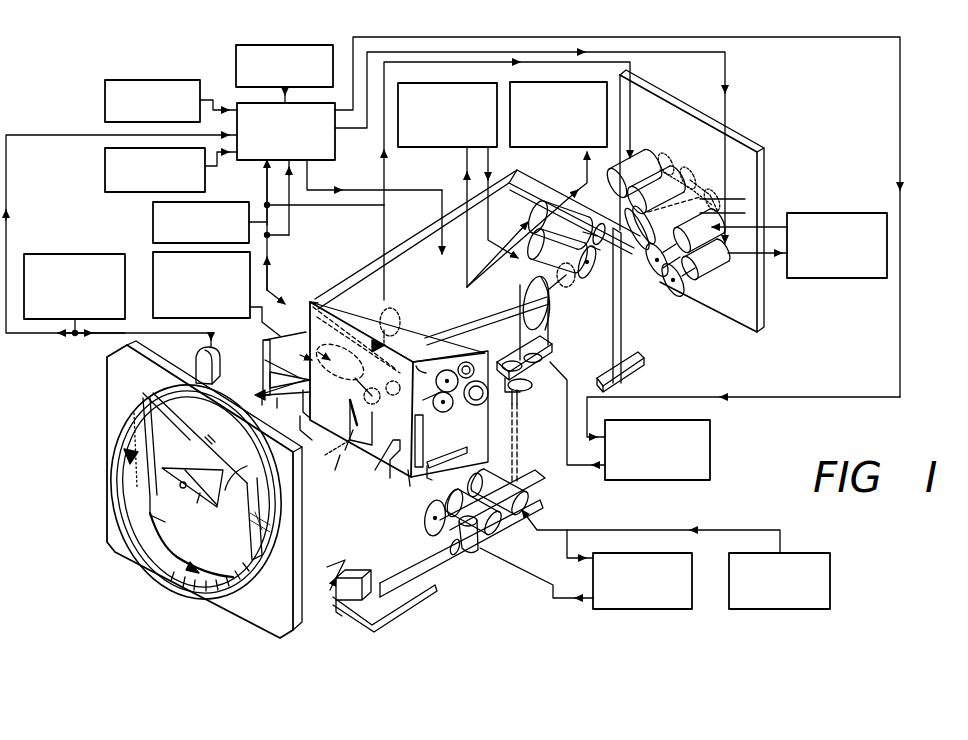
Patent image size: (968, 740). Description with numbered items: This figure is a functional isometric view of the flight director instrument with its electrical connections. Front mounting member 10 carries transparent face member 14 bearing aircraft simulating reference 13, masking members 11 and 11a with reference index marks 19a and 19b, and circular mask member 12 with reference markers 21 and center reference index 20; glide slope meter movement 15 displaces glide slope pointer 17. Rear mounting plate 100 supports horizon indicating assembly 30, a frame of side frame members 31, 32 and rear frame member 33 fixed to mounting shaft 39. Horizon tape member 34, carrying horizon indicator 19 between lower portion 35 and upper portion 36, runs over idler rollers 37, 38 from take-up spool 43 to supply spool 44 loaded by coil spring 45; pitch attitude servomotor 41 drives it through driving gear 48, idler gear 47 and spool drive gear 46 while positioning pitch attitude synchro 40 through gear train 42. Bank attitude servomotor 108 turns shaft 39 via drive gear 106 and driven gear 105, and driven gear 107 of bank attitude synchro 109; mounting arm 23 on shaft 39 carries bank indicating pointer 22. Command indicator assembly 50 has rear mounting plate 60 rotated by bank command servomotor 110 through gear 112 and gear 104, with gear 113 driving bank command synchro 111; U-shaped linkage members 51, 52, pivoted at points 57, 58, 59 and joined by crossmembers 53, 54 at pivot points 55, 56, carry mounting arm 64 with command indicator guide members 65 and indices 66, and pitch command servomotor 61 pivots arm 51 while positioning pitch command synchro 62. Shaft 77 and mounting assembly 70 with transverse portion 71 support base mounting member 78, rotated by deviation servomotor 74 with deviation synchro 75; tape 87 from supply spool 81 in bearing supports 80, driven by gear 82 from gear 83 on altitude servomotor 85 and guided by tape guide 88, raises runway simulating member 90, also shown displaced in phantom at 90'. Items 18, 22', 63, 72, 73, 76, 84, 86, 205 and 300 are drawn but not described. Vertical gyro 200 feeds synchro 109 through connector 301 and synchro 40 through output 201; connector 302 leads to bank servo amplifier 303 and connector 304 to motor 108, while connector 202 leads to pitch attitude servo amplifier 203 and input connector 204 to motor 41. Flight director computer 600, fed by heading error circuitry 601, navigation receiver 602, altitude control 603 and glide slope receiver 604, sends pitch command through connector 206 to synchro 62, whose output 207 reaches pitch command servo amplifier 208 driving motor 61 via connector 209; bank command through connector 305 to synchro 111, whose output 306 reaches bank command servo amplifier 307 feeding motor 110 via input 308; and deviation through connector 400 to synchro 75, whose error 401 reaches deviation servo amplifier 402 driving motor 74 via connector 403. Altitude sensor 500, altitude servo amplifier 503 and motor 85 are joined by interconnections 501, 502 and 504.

The front mounting member 10 is at (204, 486).
The masking member 11 is at (195, 492).
The masking member 11a is at (228, 472).
The circular mask member 12 is at (191, 545).
The aircraft simulating reference 13 is at (192, 497).
The transparent circular face member 14 is at (214, 438).
The glide slope meter movement 15 is at (200, 359).
The glide slope pointer 17 is at (144, 450).
The index 18 is at (163, 503).
The horizon indicator 19 is at (363, 422).
The horizontal reference index mark 19a is at (165, 455).
The horizontal reference index mark 19b is at (239, 519).
The center reference index 20 is at (210, 565).
The reference markers 21 is at (199, 553).
The bank indicating pointer 22 is at (324, 597).
The bracket 22' is at (329, 461).
The rigid mounting arm 23 is at (438, 567).
The horizon indicating assembly 30 is at (397, 363).
The side frame member 31 is at (356, 328).
The side frame member 32 is at (453, 414).
The rear frame member 33 is at (425, 307).
The horizon tape member 34 is at (378, 470).
The lower portion of horizon tape 35 is at (352, 450).
The upper portion of horizon tape 36 is at (288, 346).
The idler roller member 37 is at (317, 287).
The idler roller member 38 is at (311, 434).
The mounting shaft 39 is at (592, 265).
The pitch attitude synchro 40 is at (339, 362).
The pitch attitude servomotor 41 is at (395, 397).
The gear train 42 is at (370, 392).
The take-up tape spool 43 is at (396, 313).
The supply tape spool 44 is at (381, 314).
The coil spring member 45 is at (480, 398).
The spool drive gear 46 is at (443, 380).
The idler gear 47 is at (435, 396).
The driving gear 48 is at (459, 394).
The command indicator assembly 50 is at (477, 239).
The upper U-shaped linkage member 51 is at (458, 331).
The lower U-shaped linkage member 52 is at (474, 410).
The interlinking crossmember 53 is at (262, 364).
The interlinking crossmember 54 is at (395, 483).
The pivot point 55 is at (336, 401).
The pivot point 56 is at (330, 439).
The pivot point 57 is at (510, 175).
The pivot point 58 is at (591, 278).
The pivot point 59 is at (629, 375).
The rear mounting plate 60 is at (631, 305).
The pitch command servomotor 61 is at (566, 223).
The pitch command synchro 62 is at (555, 250).
The gear 63 is at (561, 286).
The mounting arm 64 is at (255, 401).
The converging guide members 65 is at (296, 411).
The command indices 66 is at (277, 409).
The mounting assembly 70 is at (537, 332).
The transverse portion 71 is at (549, 302).
The shaft 72 is at (530, 407).
The base 73 is at (548, 365).
The deviation servomotor 74 is at (510, 356).
The deviation synchro 75 is at (529, 349).
The gear 76 is at (531, 394).
The shaft 77 is at (528, 443).
The base mounting member 78 is at (498, 500).
The bearing support members 80 is at (481, 534).
The supply spool 81 is at (466, 549).
The drive gear 82 is at (419, 518).
The gear 83 is at (456, 483).
The gear 84 is at (482, 478).
The altitude servomotor 85 is at (474, 513).
The motor 86 is at (501, 493).
The tape member 87 is at (376, 564).
The tape guide member 88 is at (353, 571).
The runway simulating member 90 is at (326, 562).
The phantom representation of runway simulating member 90' is at (335, 476).
The rear mounting plate 100 is at (712, 201).
The gear 104 is at (647, 245).
The drive gear 105 is at (706, 183).
The drive gear 106 is at (688, 165).
The driven gear 107 is at (676, 172).
The bank attitude servomotor 108 is at (655, 191).
The bank attitude synchro control transformer 109 is at (632, 174).
The bank command servomotor 110 is at (693, 232).
The bank command synchro 111 is at (703, 260).
The drive gear 112 is at (661, 282).
The drive gear 113 is at (711, 282).
The vertical gyro 200 is at (162, 222).
The output connector 201 is at (273, 197).
The connector 202 is at (143, 241).
The pitch attitude servo amplifier 203 is at (171, 277).
The input connector 204 is at (286, 280).
The lead 205 is at (316, 221).
The connector 206 is at (421, 231).
The connector 207 is at (477, 217).
The pitch command servo amplifier 208 is at (447, 103).
The connector 209 is at (490, 252).
The lead 300 is at (245, 225).
The connector 301 is at (468, 181).
The connector 302 is at (528, 219).
The bank servo amplifier 303 is at (558, 103).
The connector 304 is at (510, 202).
The connector 305 is at (530, 147).
The connector 306 is at (765, 276).
The bank command servo amplifier 307 is at (837, 232).
The input connector 308 is at (755, 209).
The connector 400 is at (617, 217).
The connector 401 is at (743, 417).
The deviation servo amplifier 402 is at (675, 450).
The connector 403 is at (584, 430).
The altitude sensor 500 is at (772, 591).
The interconnection 501 is at (651, 531).
The interconnection 502 is at (596, 544).
The altitude servo amplifier 503 is at (637, 591).
The interconnection 504 is at (536, 584).
The flight director computer 600 is at (297, 139).
The heading error development circuitry 601 is at (136, 88).
The navigation receiver 602 is at (124, 170).
The altitude control 603 is at (249, 65).
The glide slope receiver 604 is at (66, 274).